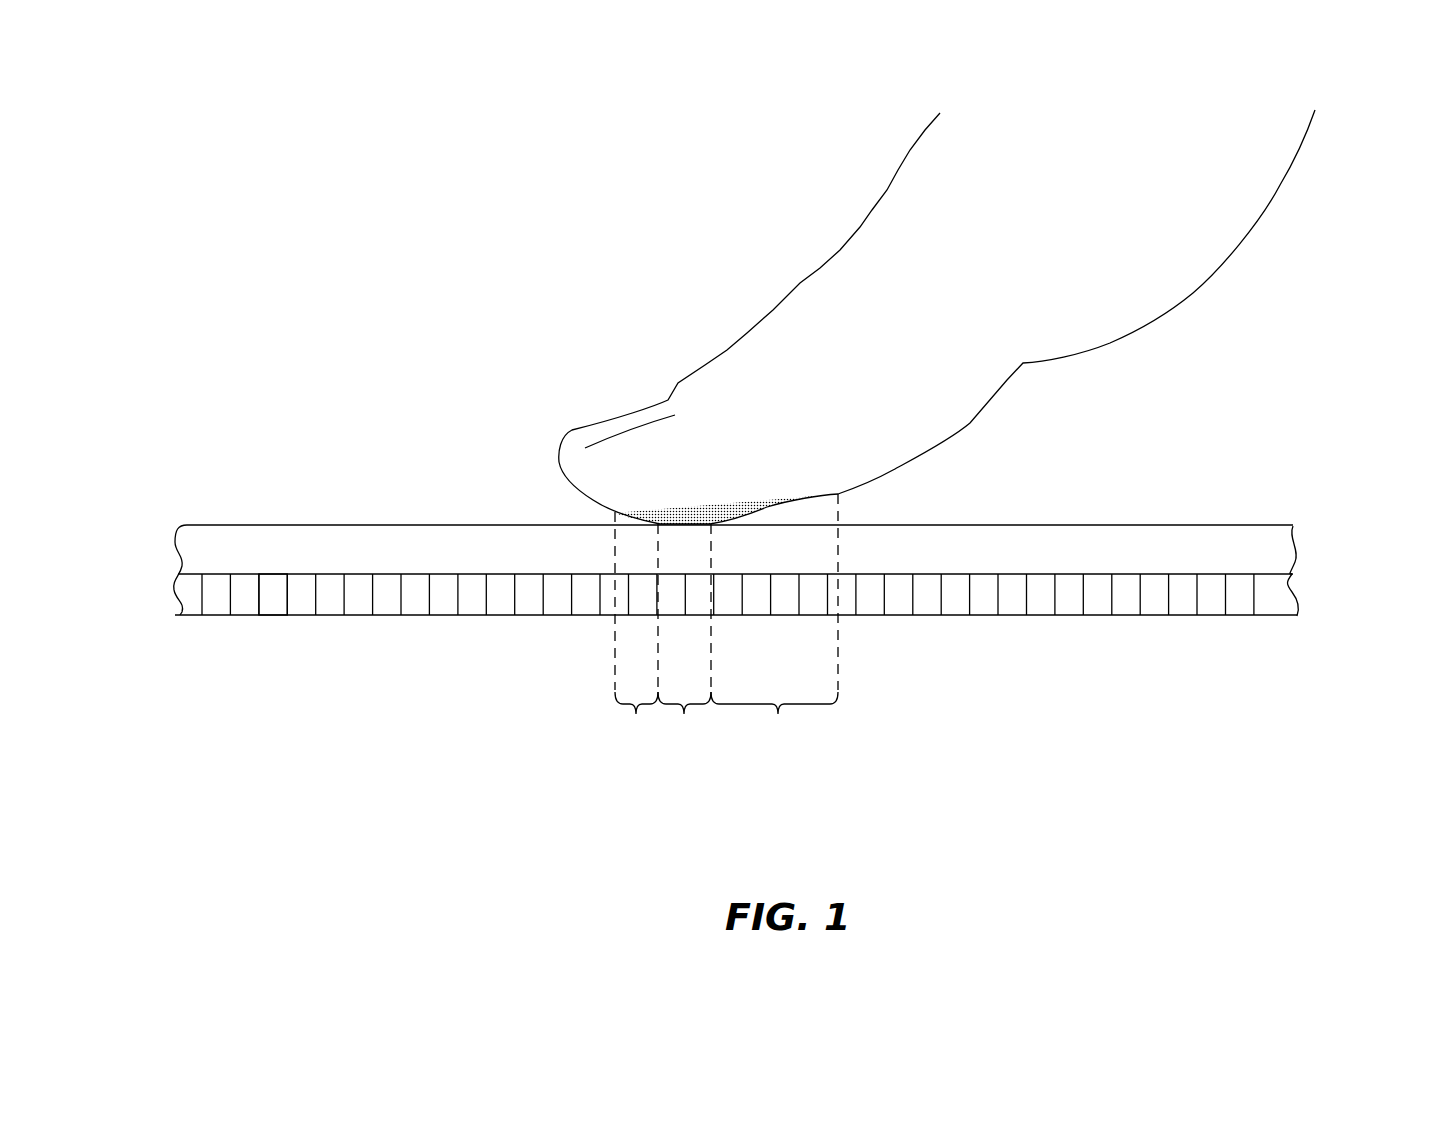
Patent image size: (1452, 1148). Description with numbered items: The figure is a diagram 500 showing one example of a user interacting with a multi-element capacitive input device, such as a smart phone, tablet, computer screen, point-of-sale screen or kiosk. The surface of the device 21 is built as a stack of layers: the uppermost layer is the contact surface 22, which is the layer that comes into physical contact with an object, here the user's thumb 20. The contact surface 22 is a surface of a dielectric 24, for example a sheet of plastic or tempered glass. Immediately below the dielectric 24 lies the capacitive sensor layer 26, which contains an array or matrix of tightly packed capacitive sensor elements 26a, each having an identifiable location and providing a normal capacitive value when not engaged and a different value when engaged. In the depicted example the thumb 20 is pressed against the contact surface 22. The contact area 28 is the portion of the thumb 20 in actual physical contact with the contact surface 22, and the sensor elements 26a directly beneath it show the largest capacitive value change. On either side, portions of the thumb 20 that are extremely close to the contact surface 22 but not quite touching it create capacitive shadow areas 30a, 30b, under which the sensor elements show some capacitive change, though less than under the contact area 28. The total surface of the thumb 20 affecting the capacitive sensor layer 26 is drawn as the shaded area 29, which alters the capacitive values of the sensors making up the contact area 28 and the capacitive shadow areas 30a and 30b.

The diagram 500 is at (278, 111).
The thumb 20 is at (782, 367).
The shaded area 29 is at (763, 507).
The device 21 is at (777, 582).
The contact surface 22 is at (370, 525).
The dielectric 24 is at (762, 521).
The capacitive sensor layer 26 is at (804, 643).
The capacitive sensor element 26a is at (273, 597).
The contact area 28 is at (685, 723).
The capacitive shadow area 30a is at (638, 722).
The capacitive shadow area 30b is at (780, 724).